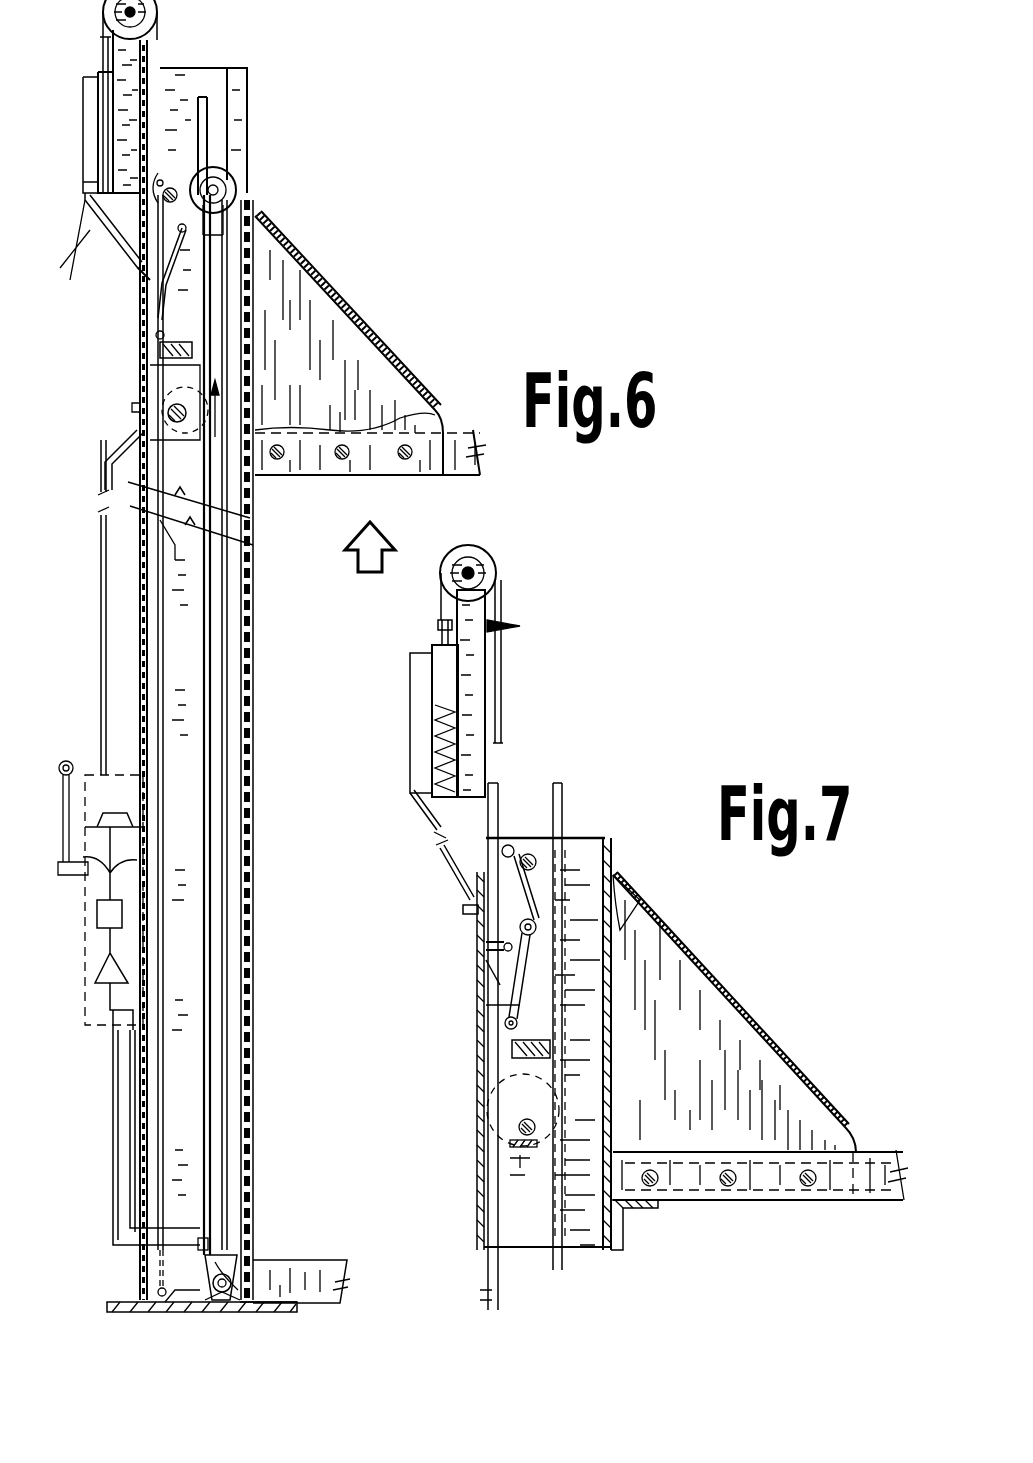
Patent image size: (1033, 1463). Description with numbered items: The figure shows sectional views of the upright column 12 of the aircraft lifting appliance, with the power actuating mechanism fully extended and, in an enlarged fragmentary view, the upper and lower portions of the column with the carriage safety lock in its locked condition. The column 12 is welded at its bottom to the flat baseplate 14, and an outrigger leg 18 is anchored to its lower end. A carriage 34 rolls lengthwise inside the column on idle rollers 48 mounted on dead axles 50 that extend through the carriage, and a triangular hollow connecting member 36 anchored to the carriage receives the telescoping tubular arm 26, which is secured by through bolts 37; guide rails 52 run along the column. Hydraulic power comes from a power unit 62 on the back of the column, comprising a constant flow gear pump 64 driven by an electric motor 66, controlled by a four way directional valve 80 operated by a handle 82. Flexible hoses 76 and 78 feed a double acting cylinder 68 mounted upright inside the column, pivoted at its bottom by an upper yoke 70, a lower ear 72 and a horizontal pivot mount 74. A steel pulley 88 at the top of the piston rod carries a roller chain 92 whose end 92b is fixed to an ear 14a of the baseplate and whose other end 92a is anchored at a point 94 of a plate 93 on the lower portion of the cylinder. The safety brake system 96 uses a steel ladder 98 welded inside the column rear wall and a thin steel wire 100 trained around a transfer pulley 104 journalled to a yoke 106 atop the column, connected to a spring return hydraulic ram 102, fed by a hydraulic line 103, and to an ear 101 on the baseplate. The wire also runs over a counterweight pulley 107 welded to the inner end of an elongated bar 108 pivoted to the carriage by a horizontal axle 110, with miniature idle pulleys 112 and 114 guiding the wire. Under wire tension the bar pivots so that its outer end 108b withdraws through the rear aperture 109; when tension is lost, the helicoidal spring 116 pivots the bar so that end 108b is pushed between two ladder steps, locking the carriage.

In FIG. 6, the upright column 12 is at (240, 68).
In FIG. 7, the upright column 12 is at (480, 1068).
In FIG. 6, the baseplate 14 is at (107, 1307).
In FIG. 6, the ear 14a is at (250, 1302).
In FIG. 6, the ground support outrigger leg 18 is at (330, 1270).
In FIG. 6, the tubular arm 26 is at (470, 432).
In FIG. 7, the tubular arm 26 is at (856, 1152).
In FIG. 6, the carriage 34 is at (160, 222).
In FIG. 7, the carriage 34 is at (570, 930).
In FIG. 6, the connecting member 36 is at (350, 345).
In FIG. 7, the connecting member 36 is at (706, 1086).
In FIG. 6, the through bolts 37 is at (405, 460).
In FIG. 7, the through bolts 37 is at (812, 1188).
In FIG. 7, the idle rollers 48 is at (556, 830).
In FIG. 6, the dead axles 50 is at (178, 160).
In FIG. 7, the dead axles 50 is at (570, 845).
In FIG. 6, the guide rails 52 is at (165, 110).
In FIG. 7, the guide rails 52 is at (556, 783).
In FIG. 6, the hydraulic power unit 62 is at (95, 1045).
In FIG. 6, the constant flow gear pump 64 is at (97, 912).
In FIG. 6, the electric motor 66 is at (95, 973).
In FIG. 6, the double acting cylinder 68 is at (233, 605).
In FIG. 6, the upper yoke 70 is at (255, 1272).
In FIG. 6, the lower ear 72 is at (222, 1293).
In FIG. 6, the horizontal pivot mount 74 is at (215, 1302).
In FIG. 6, the flexible hydraulic hose 76 is at (110, 1112).
In FIG. 6, the flexible hydraulic hose 78 is at (130, 1190).
In FIG. 6, the four way directional valve 80 is at (97, 868).
In FIG. 6, the handle 82 is at (62, 774).
In FIG. 6, the steel pulley 88 is at (238, 183).
In FIG. 6, the power transmission roller chain 92 is at (268, 260).
In FIG. 6, the chain end 92a is at (145, 372).
In FIG. 6, the chain end 92b is at (250, 1285).
In FIG. 6, the plate 93 is at (160, 345).
In FIG. 7, the plate 93 is at (560, 1048).
In FIG. 6, the anchor point 94 is at (140, 395).
In FIG. 7, the anchor point 94 is at (540, 1098).
In FIG. 7, the safety brake system 96 is at (470, 960).
In FIG. 7, the steel ladder 98 is at (500, 1140).
In FIG. 6, the steel wire 100 is at (160, 30).
In FIG. 7, the steel wire 100 is at (500, 660).
In FIG. 6, the ear 101 is at (158, 1292).
In FIG. 6, the hydraulic ram 102 is at (98, 143).
In FIG. 7, the hydraulic ram 102 is at (435, 710).
In FIG. 6, the hydraulic line 103 is at (103, 232).
In FIG. 7, the hydraulic line 103 is at (440, 848).
In FIG. 6, the transfer pulley 104 is at (103, 9).
In FIG. 7, the transfer pulley 104 is at (497, 566).
In FIG. 6, the yoke 106 is at (116, 80).
In FIG. 7, the yoke 106 is at (470, 680).
In FIG. 7, the counterweight pulley 107 is at (538, 865).
In FIG. 6, the elongated rectangular bar 108 is at (158, 283).
In FIG. 7, the elongated rectangular bar 108 is at (612, 878).
In FIG. 7, the outer end 108b is at (485, 975).
In FIG. 7, the rear aperture 109 is at (518, 1023).
In FIG. 7, the horizontal pivot axle 110 is at (540, 945).
In FIG. 7, the miniature idle pulley 112 is at (500, 851).
In FIG. 7, the miniature idle pulley 114 is at (485, 1008).
In FIG. 7, the helicoidal spring 116 is at (482, 945).